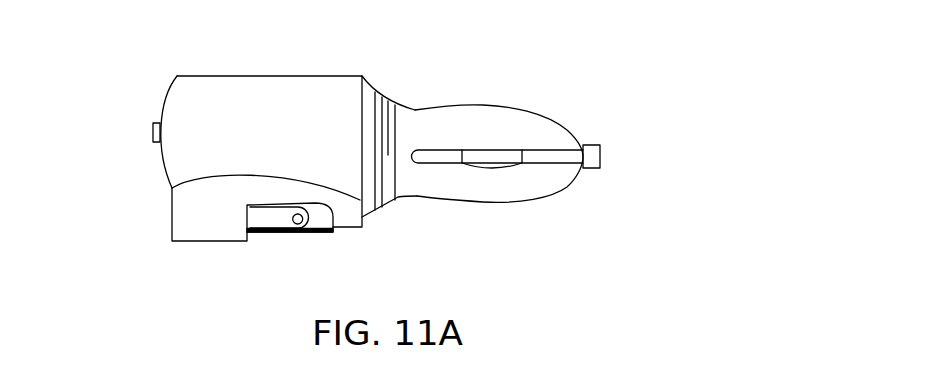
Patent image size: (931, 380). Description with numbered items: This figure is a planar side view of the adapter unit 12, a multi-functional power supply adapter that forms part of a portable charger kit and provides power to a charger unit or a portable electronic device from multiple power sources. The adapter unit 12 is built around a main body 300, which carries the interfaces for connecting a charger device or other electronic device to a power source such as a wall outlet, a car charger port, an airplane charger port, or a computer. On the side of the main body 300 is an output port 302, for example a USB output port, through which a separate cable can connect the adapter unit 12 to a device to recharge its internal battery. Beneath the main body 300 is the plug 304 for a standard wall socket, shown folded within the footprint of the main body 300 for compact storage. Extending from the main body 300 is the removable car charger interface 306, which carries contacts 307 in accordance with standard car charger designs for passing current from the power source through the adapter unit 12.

The adapter unit 12 is at (257, 45).
The main body 300 is at (177, 163).
The output port 302 is at (122, 133).
The plug 304 is at (268, 220).
The car charger interface 306 is at (513, 223).
The contacts 307 is at (492, 158).